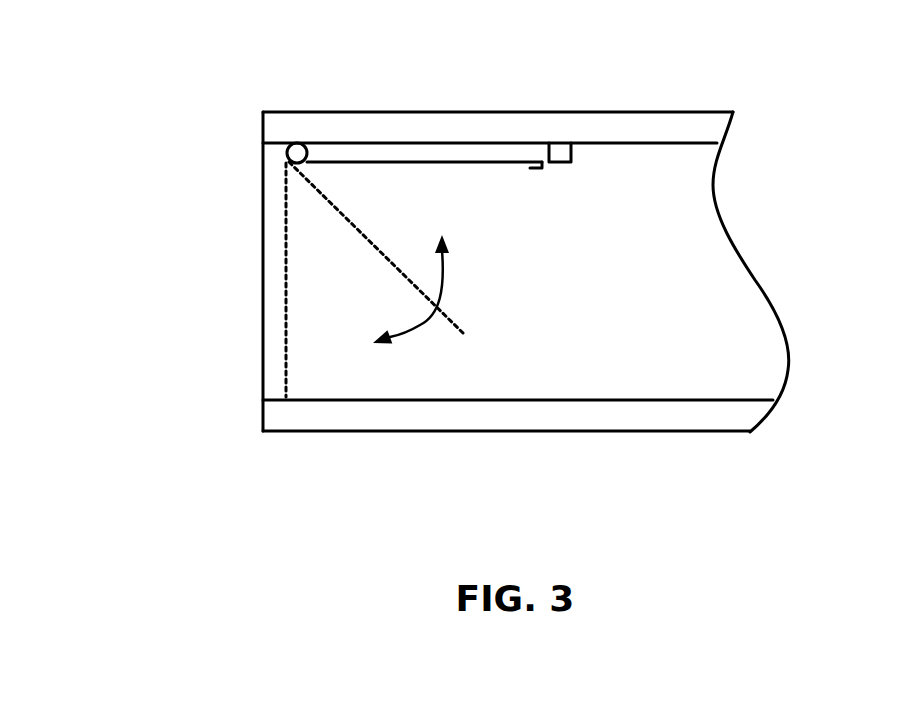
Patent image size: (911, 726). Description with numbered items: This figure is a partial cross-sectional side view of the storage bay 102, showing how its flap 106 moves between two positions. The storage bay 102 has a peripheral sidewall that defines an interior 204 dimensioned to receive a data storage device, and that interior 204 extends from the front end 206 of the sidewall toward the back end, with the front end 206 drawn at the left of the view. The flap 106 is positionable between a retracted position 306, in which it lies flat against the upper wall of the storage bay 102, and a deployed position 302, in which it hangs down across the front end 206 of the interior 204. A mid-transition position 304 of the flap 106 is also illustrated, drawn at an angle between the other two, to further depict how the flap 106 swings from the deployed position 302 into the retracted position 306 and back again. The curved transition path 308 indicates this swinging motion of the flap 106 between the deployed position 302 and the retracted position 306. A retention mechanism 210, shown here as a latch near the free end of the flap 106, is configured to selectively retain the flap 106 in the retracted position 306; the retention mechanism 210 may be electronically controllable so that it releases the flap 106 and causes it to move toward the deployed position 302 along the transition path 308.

The storage bay 102 is at (158, 74).
The flap 106 is at (463, 160).
The interior 204 is at (210, 303).
The front end 206 is at (248, 191).
The retention mechanism 210 is at (545, 188).
The deployed position 302 is at (268, 377).
The mid-transition position 304 is at (340, 228).
The retracted position 306 is at (383, 145).
The transition path 308 is at (423, 322).